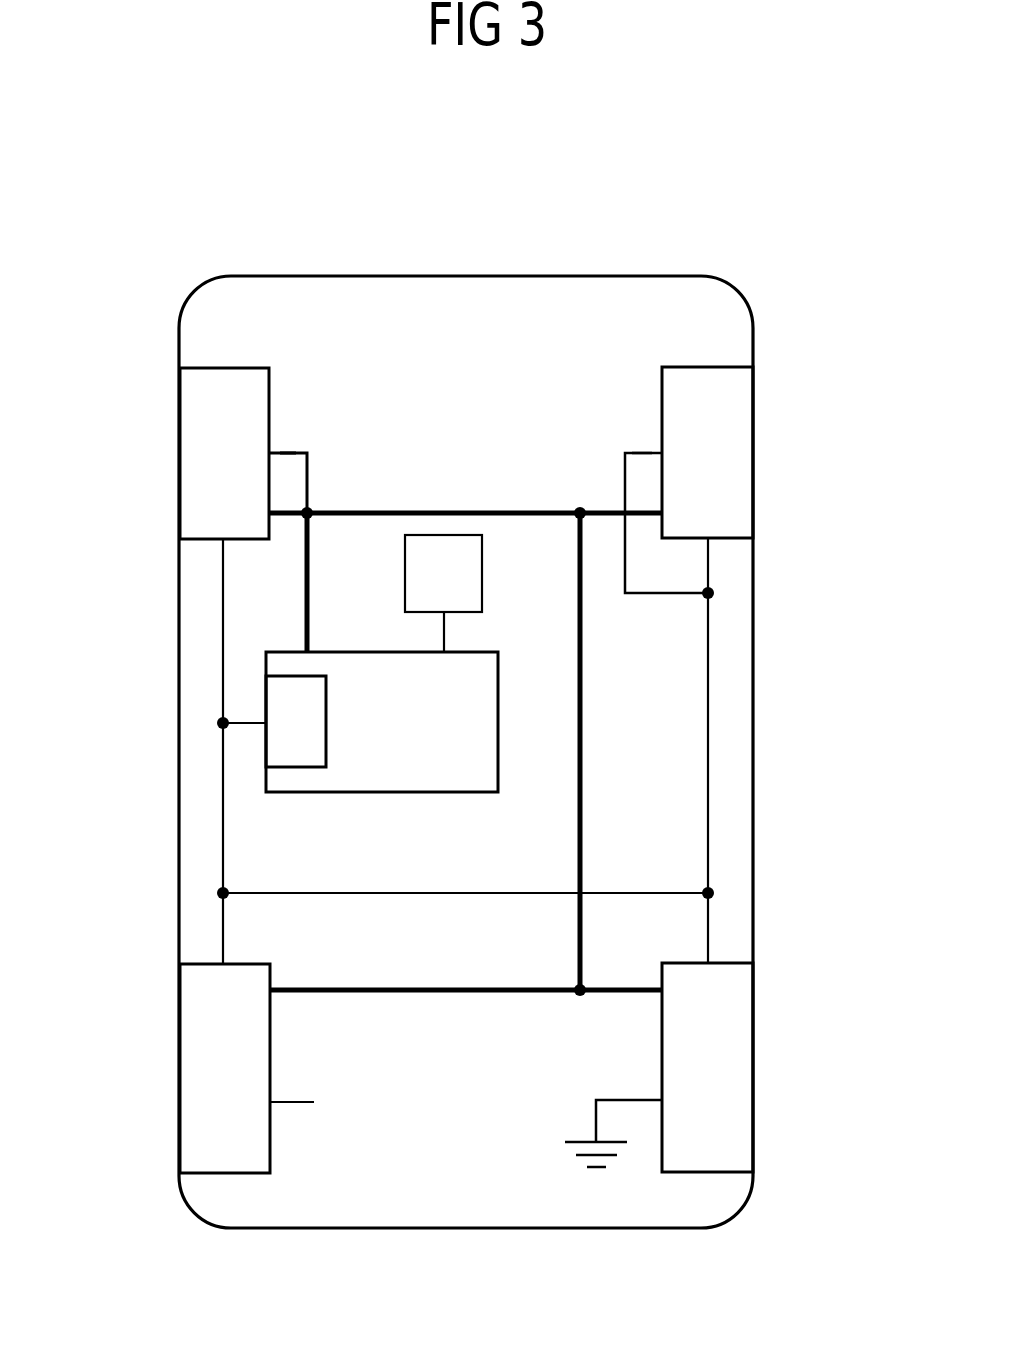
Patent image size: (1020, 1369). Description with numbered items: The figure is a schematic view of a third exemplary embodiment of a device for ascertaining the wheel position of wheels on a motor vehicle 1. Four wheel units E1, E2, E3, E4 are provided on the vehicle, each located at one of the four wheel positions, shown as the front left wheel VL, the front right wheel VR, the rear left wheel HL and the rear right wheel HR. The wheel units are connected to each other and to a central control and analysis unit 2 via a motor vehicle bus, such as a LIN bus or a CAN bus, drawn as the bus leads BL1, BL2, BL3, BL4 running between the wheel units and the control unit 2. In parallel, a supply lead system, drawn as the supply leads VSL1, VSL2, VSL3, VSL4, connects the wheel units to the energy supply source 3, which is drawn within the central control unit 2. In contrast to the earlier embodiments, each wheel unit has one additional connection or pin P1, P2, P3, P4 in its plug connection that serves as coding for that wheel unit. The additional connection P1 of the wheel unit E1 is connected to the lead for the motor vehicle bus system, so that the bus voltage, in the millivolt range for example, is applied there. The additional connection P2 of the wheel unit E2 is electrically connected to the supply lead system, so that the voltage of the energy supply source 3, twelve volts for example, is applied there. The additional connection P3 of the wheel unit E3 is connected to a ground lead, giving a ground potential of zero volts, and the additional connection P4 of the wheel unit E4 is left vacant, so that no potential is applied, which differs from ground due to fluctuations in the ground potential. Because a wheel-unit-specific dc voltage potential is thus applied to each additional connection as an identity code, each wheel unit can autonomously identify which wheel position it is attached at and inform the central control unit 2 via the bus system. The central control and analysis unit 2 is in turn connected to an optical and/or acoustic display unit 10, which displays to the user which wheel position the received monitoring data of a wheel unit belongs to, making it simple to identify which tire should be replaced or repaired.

The motor vehicle 1 is at (538, 312).
The central control and analysis unit 2 is at (398, 743).
The energy supply source 3 is at (309, 743).
The optical and/or acoustic display unit 10 is at (483, 578).
The wheel unit E1 is at (205, 407).
The wheel unit E2 is at (730, 400).
The wheel unit E3 is at (735, 1108).
The wheel unit E4 is at (203, 1100).
The front-left wheel VL is at (228, 487).
The front-right wheel VR is at (703, 482).
The rear-left wheel HL is at (230, 1038).
The rear-right wheel HR is at (708, 1043).
The bus line 1 BL1 is at (305, 583).
The bus line 2 BL2 is at (400, 513).
The bus line 3 BL3 is at (582, 778).
The bus line 4 BL4 is at (423, 992).
The supply line 1 VSL1 is at (225, 657).
The supply line 2 VSL2 is at (708, 680).
The supply line 3 VSL3 is at (708, 930).
The supply line 4 VSL4 is at (223, 922).
The additional connection P1 is at (288, 453).
The additional connection P2 is at (642, 453).
The additional connection P3 is at (642, 1100).
The additional connection P4 is at (296, 1105).